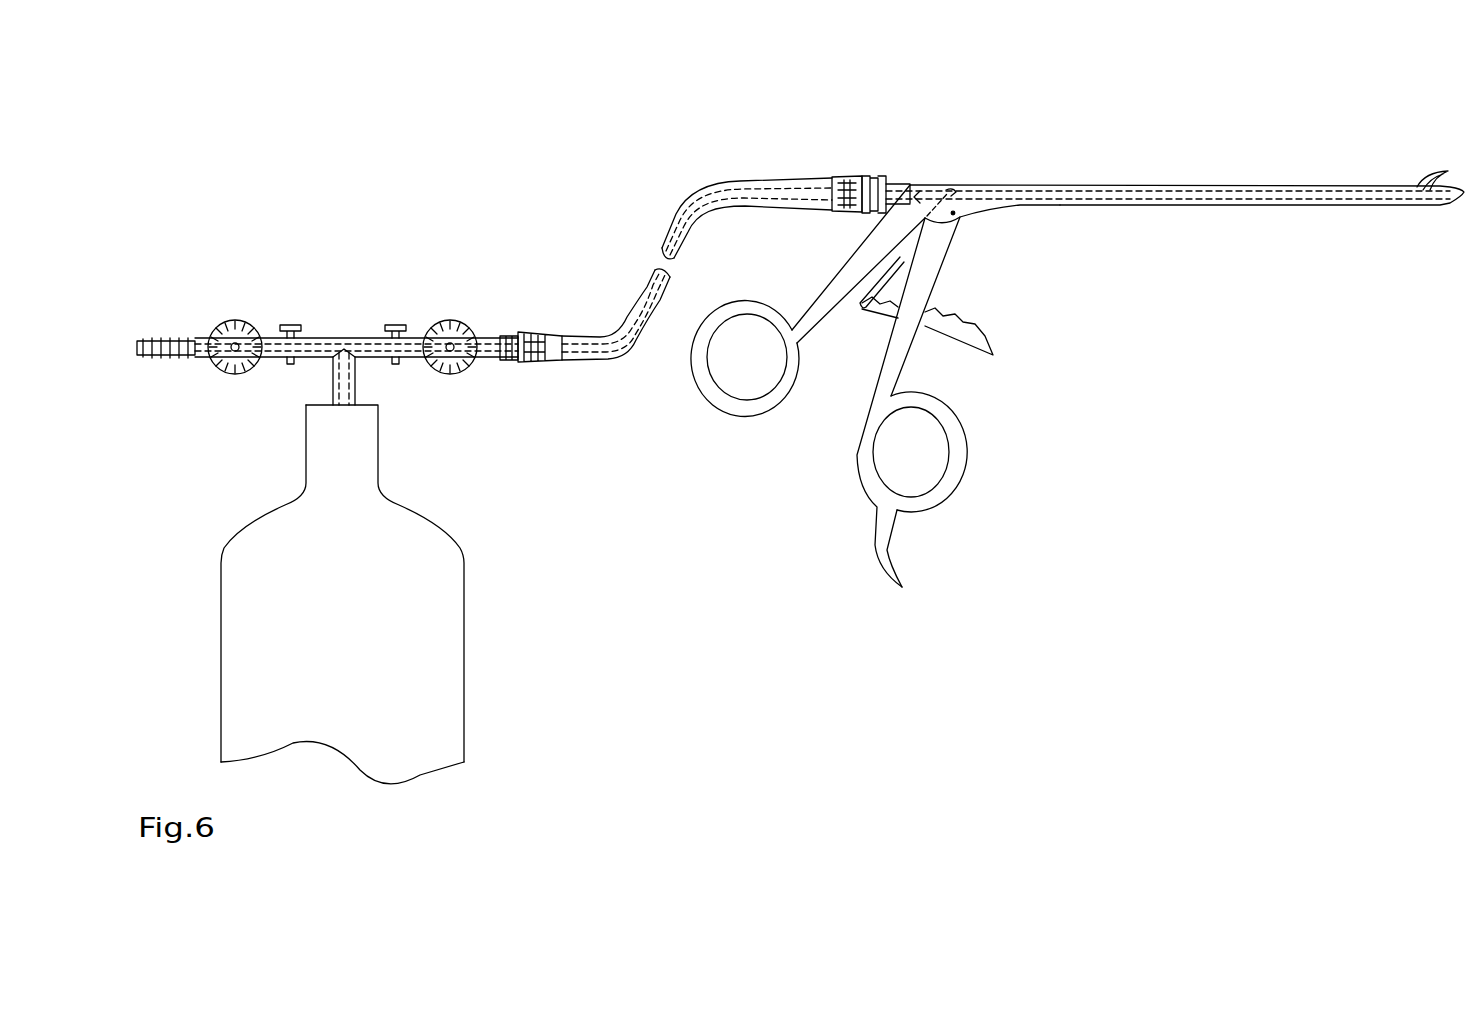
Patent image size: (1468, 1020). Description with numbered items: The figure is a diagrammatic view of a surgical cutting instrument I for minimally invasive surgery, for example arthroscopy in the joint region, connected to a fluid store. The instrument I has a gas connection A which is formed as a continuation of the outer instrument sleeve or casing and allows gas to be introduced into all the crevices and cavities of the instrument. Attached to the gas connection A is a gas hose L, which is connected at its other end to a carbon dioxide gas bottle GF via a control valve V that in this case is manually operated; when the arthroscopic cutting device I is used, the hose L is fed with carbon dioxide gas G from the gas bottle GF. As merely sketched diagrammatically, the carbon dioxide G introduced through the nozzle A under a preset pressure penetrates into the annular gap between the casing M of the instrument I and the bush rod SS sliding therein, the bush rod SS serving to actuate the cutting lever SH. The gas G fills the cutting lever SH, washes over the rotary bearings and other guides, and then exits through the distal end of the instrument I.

The gas connection A is at (871, 186).
The surgical cutting instrument I is at (1073, 179).
The casing M is at (1220, 186).
The bush rod SS is at (1307, 187).
The cutting lever SH is at (1423, 174).
The control valve V is at (395, 323).
The gas hose L is at (565, 365).
The gas bottle GF is at (465, 653).
The carbon dioxide gas G is at (408, 718).